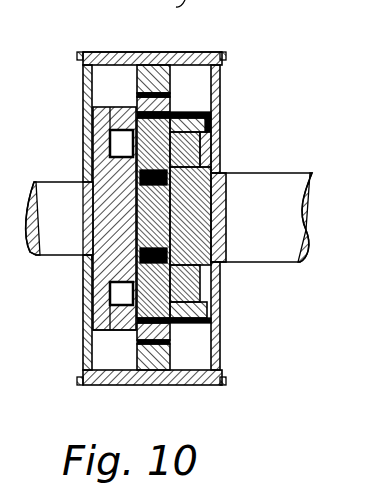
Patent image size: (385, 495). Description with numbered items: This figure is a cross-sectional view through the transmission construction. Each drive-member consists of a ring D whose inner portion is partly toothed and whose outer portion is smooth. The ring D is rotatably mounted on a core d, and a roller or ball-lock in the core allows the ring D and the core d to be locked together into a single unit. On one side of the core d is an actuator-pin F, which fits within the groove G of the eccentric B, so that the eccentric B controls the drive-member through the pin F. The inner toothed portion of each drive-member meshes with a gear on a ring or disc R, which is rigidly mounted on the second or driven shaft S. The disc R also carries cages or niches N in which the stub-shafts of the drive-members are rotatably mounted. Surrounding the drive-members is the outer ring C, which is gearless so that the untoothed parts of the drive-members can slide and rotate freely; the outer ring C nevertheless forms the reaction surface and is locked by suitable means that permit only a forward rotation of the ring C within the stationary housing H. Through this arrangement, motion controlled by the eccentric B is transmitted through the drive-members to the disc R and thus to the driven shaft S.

The outer ring C is at (199, 52).
The stationary housing H is at (150, 52).
The driving shaft A is at (48, 188).
The driven shaft S is at (284, 264).
The groove G is at (97, 116).
The actuator-pin F is at (110, 136).
The eccentric B is at (110, 331).
The ring D is at (172, 84).
The core d is at (222, 95).
The ring d' is at (227, 225).
The ring or disc R is at (212, 127).
The cages or niches N is at (228, 230).